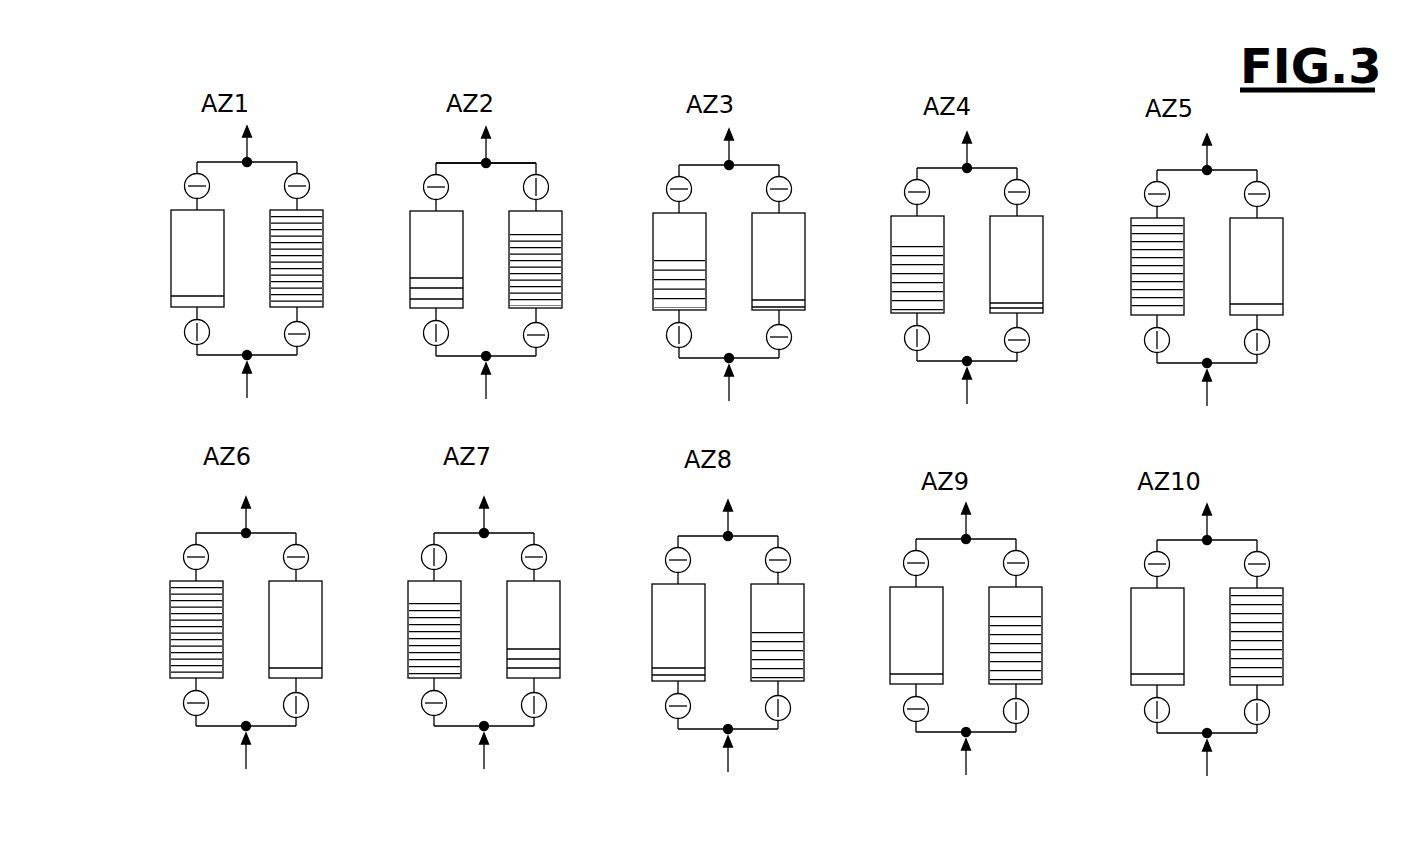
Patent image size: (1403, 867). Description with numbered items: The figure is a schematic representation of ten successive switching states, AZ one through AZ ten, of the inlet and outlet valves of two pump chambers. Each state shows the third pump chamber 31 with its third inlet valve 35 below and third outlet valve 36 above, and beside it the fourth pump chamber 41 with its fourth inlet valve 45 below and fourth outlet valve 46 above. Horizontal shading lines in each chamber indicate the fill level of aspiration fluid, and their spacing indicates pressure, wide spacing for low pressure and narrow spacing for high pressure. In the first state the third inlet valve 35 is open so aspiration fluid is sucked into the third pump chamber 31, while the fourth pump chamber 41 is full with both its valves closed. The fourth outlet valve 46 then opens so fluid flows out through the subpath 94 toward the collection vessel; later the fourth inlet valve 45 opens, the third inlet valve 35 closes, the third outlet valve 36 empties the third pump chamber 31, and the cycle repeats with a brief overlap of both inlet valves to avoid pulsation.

The third pump chamber 31 is at (657, 447).
The fourth pump chamber 41 is at (800, 447).
The third inlet valve 35 is at (653, 530).
The third outlet valve 36 is at (654, 366).
The fourth inlet valve 45 is at (801, 539).
The fourth outlet valve 46 is at (801, 369).
The subpath 94 is at (508, 153).